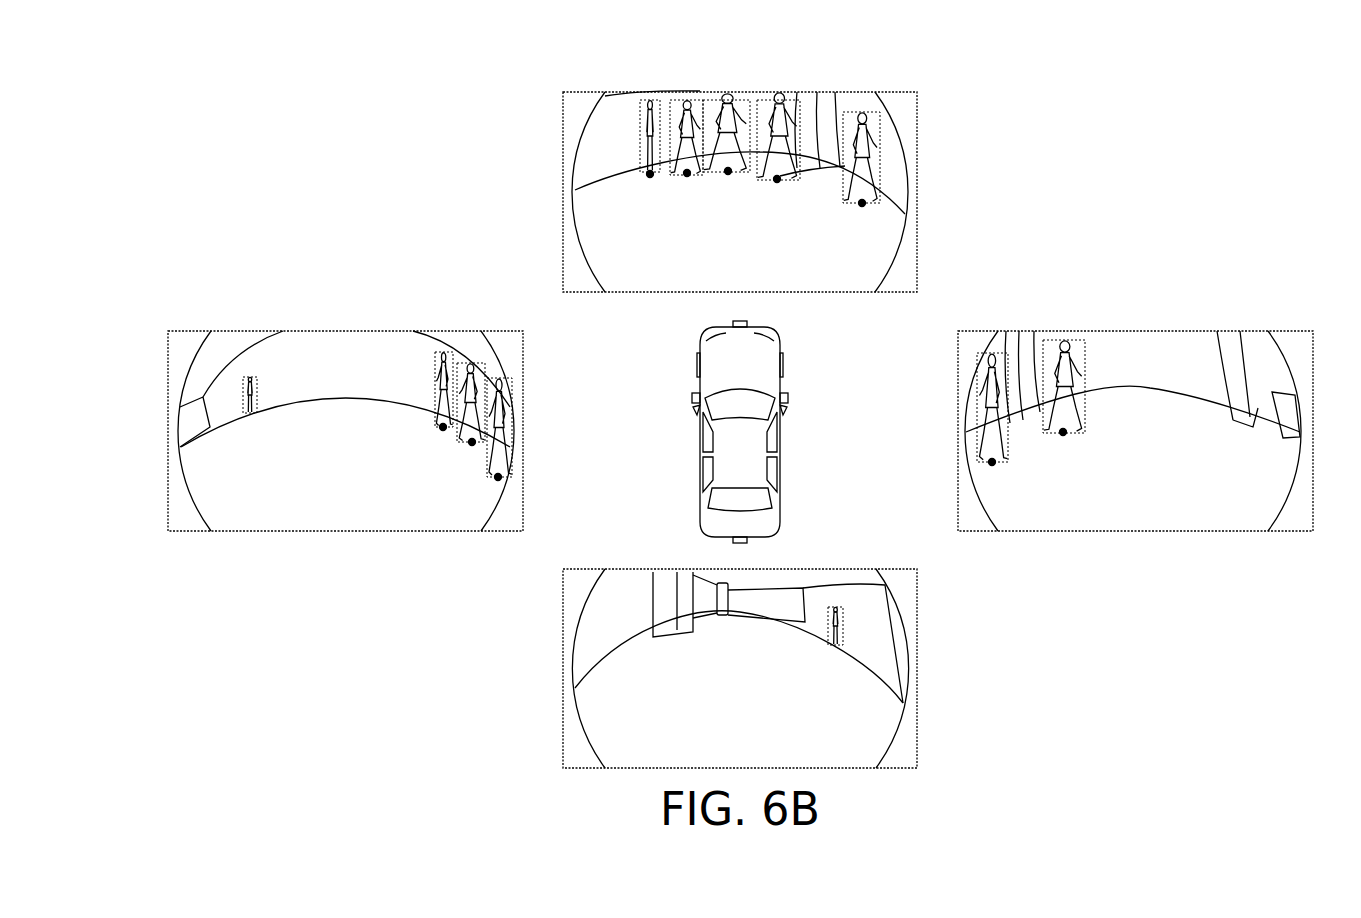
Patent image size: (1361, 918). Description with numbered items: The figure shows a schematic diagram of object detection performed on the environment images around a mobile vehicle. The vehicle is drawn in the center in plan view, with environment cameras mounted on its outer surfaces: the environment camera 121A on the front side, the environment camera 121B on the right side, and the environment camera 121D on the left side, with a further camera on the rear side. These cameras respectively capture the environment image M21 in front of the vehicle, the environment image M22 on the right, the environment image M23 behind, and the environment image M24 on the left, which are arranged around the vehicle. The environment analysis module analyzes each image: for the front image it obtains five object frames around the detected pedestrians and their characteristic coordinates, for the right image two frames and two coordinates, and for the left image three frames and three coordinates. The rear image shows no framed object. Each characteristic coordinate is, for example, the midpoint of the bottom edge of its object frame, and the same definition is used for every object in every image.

The environment image M21 is at (563, 96).
The environment image M22 is at (1283, 331).
The environment image M23 is at (917, 745).
The environment image M24 is at (167, 348).
The environment camera 121A is at (746, 322).
The environment camera 121B is at (788, 398).
The environment camera 121D is at (692, 398).